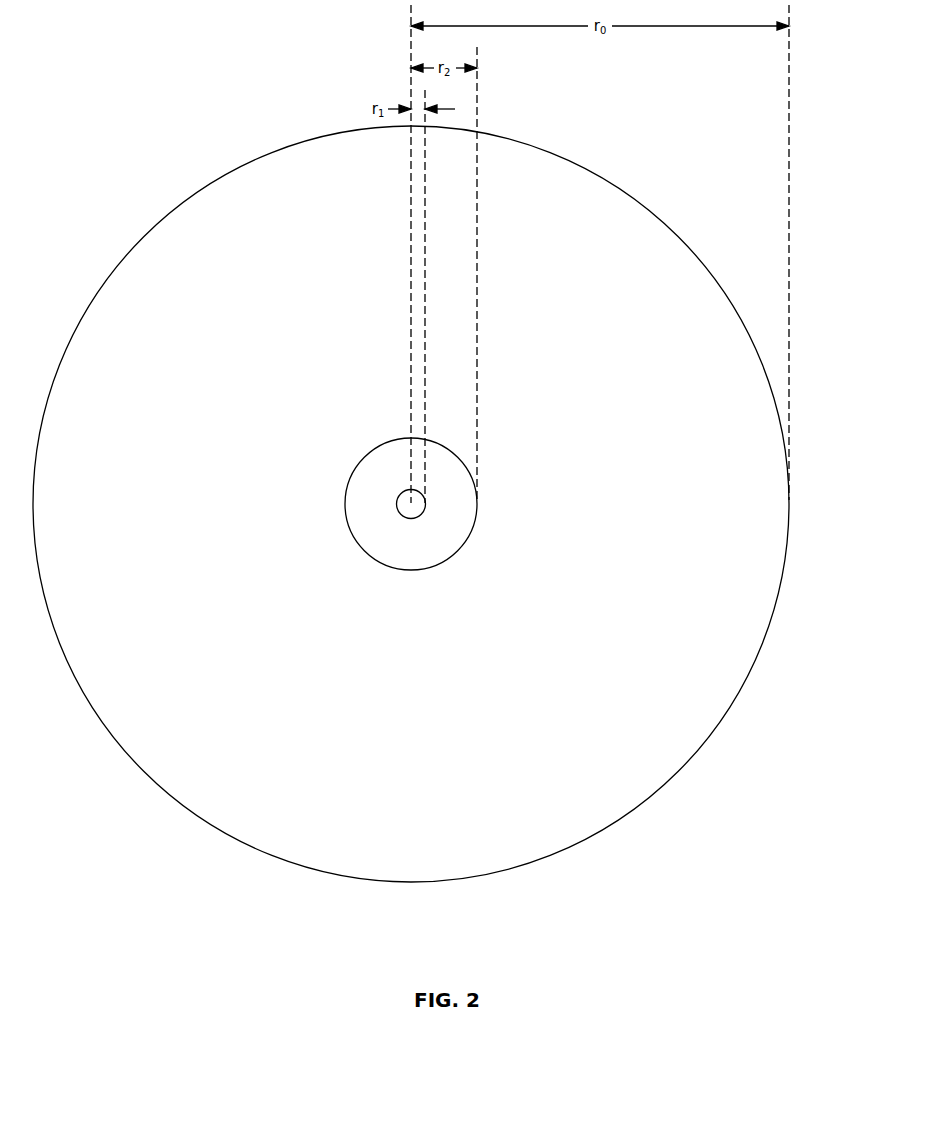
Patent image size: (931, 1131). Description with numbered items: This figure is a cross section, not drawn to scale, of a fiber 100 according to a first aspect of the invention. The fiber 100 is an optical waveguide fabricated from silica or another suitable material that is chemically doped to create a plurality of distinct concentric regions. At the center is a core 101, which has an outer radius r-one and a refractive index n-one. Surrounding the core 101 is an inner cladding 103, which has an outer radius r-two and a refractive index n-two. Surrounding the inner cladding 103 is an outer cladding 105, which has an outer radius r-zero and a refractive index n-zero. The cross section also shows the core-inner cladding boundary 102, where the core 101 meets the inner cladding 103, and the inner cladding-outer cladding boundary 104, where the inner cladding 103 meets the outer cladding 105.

The fiber 100 is at (172, 149).
The core 101 is at (415, 508).
The core-inner cladding boundary 102 is at (410, 519).
The inner cladding 103 is at (425, 547).
The inner cladding-outer cladding boundary 104 is at (409, 570).
The outer cladding 105 is at (576, 712).